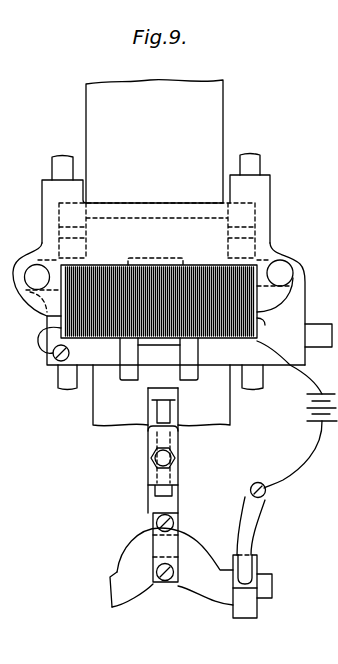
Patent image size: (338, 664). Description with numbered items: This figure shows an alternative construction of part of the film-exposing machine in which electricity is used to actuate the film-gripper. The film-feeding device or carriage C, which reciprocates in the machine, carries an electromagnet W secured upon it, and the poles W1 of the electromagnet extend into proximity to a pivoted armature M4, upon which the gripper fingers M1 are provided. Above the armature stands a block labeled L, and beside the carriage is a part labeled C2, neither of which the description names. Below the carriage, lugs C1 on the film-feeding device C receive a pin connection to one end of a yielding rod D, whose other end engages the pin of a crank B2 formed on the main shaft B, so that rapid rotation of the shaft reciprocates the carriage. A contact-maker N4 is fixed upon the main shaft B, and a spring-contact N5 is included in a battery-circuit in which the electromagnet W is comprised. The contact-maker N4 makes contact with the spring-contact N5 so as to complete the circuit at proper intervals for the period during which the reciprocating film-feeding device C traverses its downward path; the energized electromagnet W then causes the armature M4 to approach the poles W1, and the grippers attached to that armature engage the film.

The magnet core block L is at (161, 141).
The pivoted armature M4 is at (152, 218).
The fingers of the film-gripper M1 is at (156, 209).
The poles of the electromagnet W1 is at (159, 286).
The electromagnet W is at (259, 322).
The film-feeding device C is at (167, 334).
The lugs C1 is at (195, 390).
The terminal block C2 is at (320, 327).
The yielding rod D is at (175, 450).
The crank B2 is at (186, 538).
The spring-contact N5 is at (263, 496).
The main shaft B is at (269, 582).
The contact-maker N4 is at (258, 605).